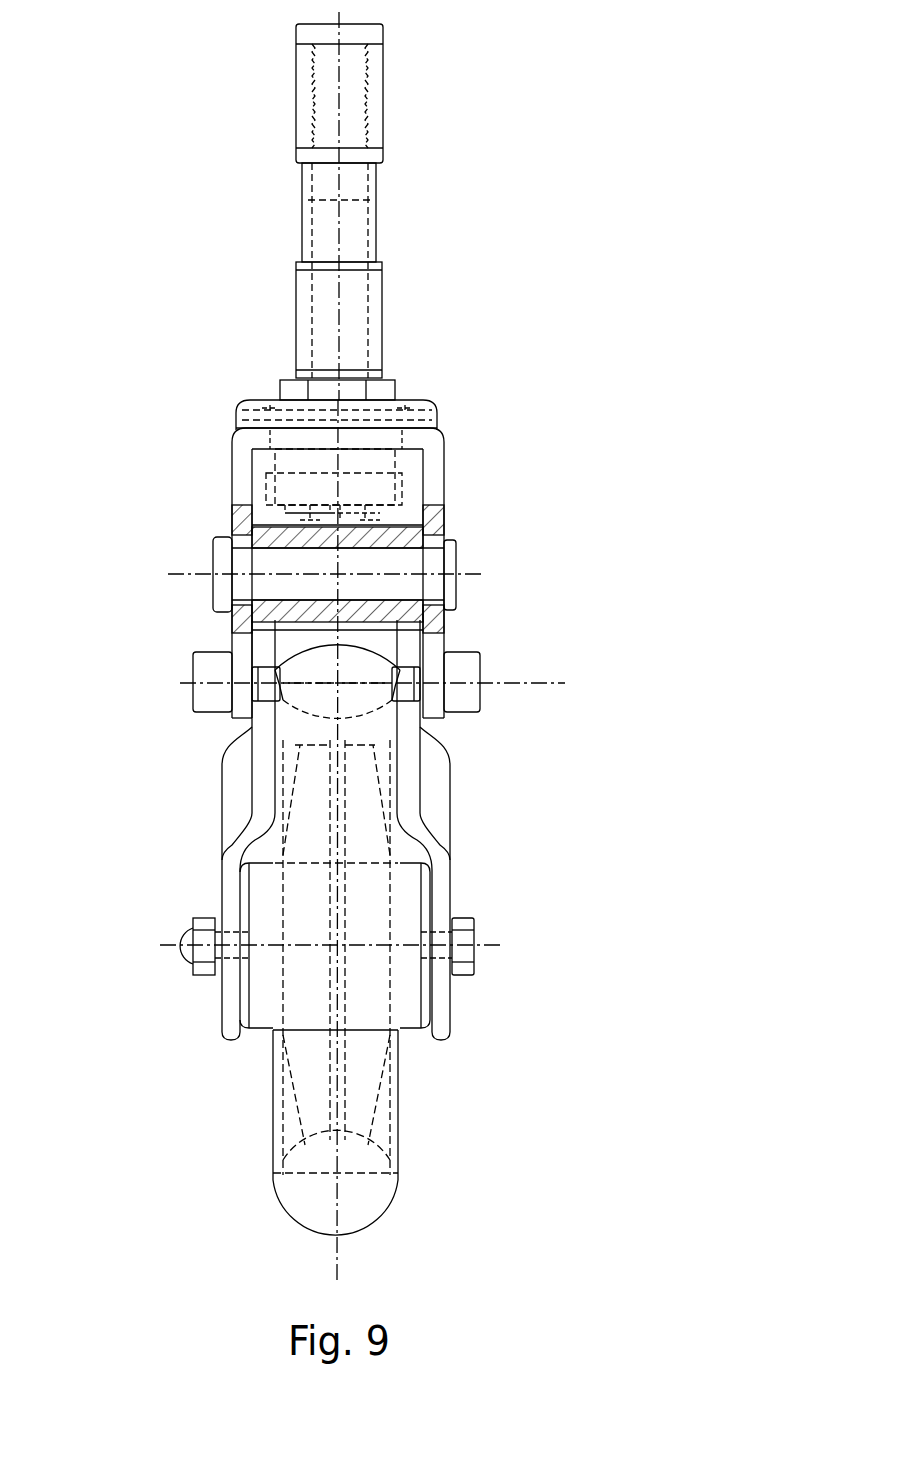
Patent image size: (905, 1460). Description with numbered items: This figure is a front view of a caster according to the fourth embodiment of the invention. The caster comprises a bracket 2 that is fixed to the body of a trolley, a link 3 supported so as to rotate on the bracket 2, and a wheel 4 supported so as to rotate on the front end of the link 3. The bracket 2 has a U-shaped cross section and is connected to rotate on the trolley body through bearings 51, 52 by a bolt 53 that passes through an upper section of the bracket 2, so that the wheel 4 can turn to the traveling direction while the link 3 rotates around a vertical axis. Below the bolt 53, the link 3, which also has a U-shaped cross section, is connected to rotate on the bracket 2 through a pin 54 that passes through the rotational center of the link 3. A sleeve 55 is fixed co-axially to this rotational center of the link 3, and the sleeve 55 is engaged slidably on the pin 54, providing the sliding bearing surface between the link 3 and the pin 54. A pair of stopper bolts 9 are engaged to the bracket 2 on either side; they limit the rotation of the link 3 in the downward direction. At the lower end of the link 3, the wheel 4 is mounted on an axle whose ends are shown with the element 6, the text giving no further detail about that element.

The bracket 2 is at (233, 455).
The link 3 is at (222, 862).
The wheel 4 is at (398, 1218).
The axle nut 6 is at (476, 926).
The stopper bolts 9 is at (194, 676).
The bearing 51 is at (440, 437).
The bearing 52 is at (405, 490).
The bolt 53 is at (374, 300).
The pin 54 is at (215, 548).
The sleeve 55 is at (405, 618).